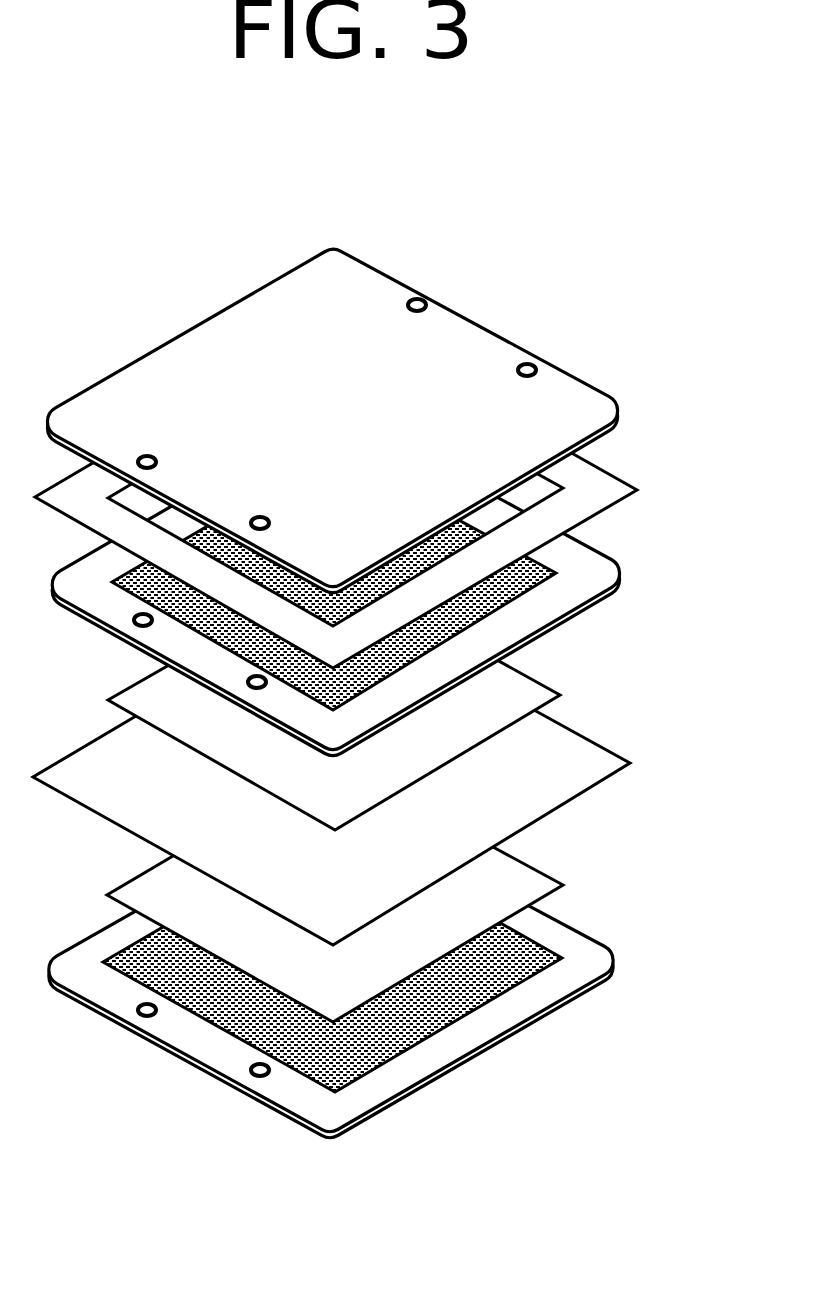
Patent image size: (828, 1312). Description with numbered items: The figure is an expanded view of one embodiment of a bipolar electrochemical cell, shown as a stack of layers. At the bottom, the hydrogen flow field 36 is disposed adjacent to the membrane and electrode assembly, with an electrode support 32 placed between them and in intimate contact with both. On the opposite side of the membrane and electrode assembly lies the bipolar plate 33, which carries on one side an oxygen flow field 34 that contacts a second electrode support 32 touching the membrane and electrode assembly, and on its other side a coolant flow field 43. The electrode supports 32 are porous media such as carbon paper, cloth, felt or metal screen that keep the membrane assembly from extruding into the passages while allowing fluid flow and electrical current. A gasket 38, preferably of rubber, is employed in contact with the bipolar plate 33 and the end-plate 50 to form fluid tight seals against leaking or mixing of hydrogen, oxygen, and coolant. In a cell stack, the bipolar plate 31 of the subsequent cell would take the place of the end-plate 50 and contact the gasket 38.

The end-plate 50 is at (613, 394).
The gasket 38 is at (617, 474).
The bipolar plate 33 is at (608, 554).
The coolant flow field 43 is at (572, 592).
The oxygen flow field 34 is at (569, 644).
The electrode support 32 is at (490, 744).
The bipolar plate 31 is at (582, 952).
The hydrogen flow field 36 is at (548, 975).